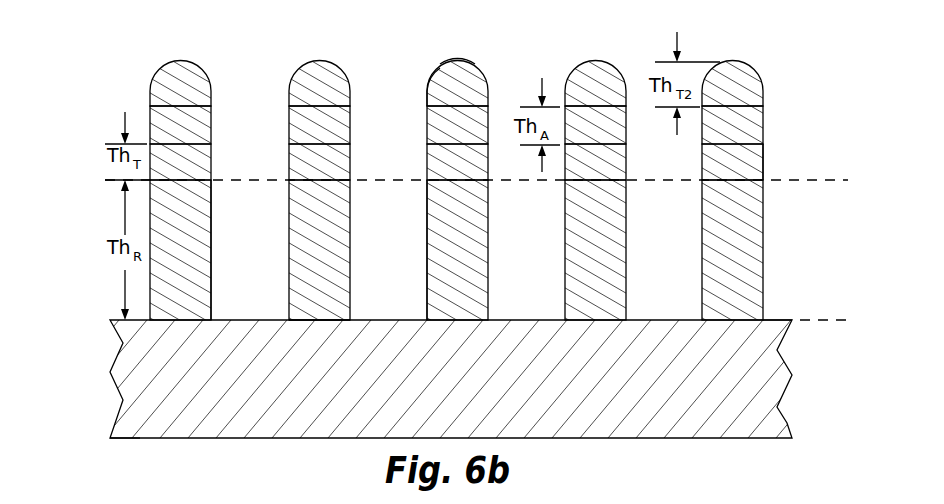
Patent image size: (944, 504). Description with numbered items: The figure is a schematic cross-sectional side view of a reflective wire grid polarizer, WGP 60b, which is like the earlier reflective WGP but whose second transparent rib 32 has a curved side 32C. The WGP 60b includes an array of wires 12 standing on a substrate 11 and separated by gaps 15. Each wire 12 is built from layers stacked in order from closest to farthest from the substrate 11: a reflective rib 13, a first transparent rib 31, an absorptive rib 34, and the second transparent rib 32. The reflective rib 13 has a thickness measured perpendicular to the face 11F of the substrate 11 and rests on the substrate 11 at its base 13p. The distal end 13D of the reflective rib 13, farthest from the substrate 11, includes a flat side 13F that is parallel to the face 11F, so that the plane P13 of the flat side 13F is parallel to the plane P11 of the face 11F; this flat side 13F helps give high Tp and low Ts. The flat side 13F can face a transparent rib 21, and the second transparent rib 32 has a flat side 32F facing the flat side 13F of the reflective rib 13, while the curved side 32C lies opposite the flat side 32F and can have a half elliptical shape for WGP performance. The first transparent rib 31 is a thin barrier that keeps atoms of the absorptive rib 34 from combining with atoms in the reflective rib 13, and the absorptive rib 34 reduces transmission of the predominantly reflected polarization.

The substrate 11 is at (451, 396).
The face of the substrate 11F is at (774, 318).
The wires 12 is at (63, 198).
The reflective rib 13 is at (745, 272).
The distal end of the reflective rib 13D is at (190, 183).
The flat side of the reflective rib 13F is at (460, 185).
The pillar base 13p is at (318, 318).
The gap between pillars 15 is at (451, 241).
The transparent rib 21 is at (787, 163).
The first transparent rib 31 is at (745, 174).
The second transparent rib 32 is at (745, 99).
The curved side of the second transparent rib 32C is at (450, 61).
The flat side of the second transparent rib 32F is at (430, 100).
The absorptive rib 34 is at (745, 137).
The reflective WGP 60b is at (68, 398).
The plane of the face of the substrate P11 is at (843, 323).
The plane of the flat side of the reflective rib P13 is at (496, 185).